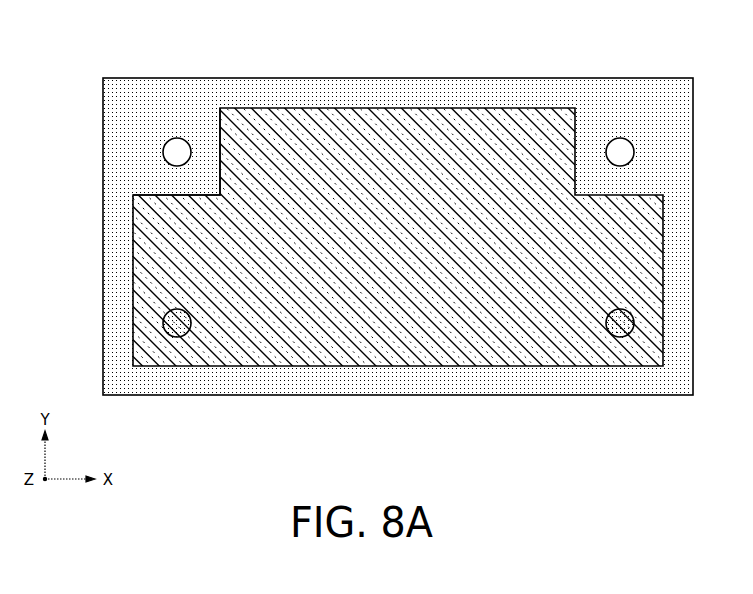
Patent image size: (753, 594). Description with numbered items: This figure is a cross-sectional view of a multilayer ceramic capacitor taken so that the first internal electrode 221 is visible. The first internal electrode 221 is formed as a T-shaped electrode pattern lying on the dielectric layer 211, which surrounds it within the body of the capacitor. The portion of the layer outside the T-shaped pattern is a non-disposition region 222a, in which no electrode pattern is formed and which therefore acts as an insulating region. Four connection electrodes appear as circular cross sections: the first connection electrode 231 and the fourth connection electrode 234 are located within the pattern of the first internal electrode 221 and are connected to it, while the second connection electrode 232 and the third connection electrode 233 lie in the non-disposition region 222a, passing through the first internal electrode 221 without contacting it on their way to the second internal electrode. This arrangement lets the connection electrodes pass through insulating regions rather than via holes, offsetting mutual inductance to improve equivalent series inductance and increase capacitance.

The dielectric layer 211 is at (395, 88).
The first internal electrode 221 is at (485, 116).
The non-disposition region 222a is at (205, 152).
The first connection electrode 231 is at (173, 328).
The second connection electrode 232 is at (172, 138).
The third connection electrode 233 is at (622, 138).
The fourth connection electrode 234 is at (624, 328).